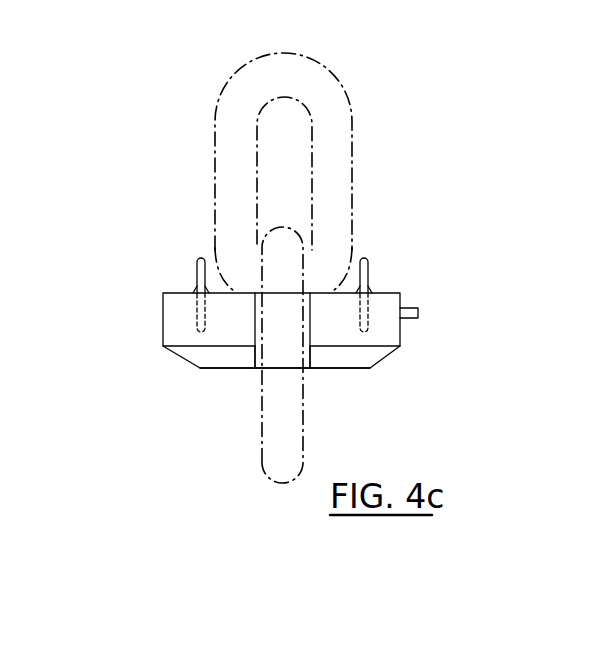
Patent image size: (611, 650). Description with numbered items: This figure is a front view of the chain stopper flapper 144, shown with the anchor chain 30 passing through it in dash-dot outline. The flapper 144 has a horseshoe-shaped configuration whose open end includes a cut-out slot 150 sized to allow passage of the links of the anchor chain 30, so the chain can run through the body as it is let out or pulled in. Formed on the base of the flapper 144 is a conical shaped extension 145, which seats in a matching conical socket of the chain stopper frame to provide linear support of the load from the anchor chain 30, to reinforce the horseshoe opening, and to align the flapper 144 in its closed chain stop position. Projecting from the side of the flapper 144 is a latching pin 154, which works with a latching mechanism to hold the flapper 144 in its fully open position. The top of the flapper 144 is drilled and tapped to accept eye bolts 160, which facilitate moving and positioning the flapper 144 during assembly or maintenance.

The anchor chain 30 is at (361, 100).
The chain stopper flapper 144 is at (381, 259).
The conical shaped extension 145 is at (380, 364).
The cut-out slot 150 is at (299, 352).
The latching pin 154 is at (419, 313).
The eye bolts 160 is at (195, 291).